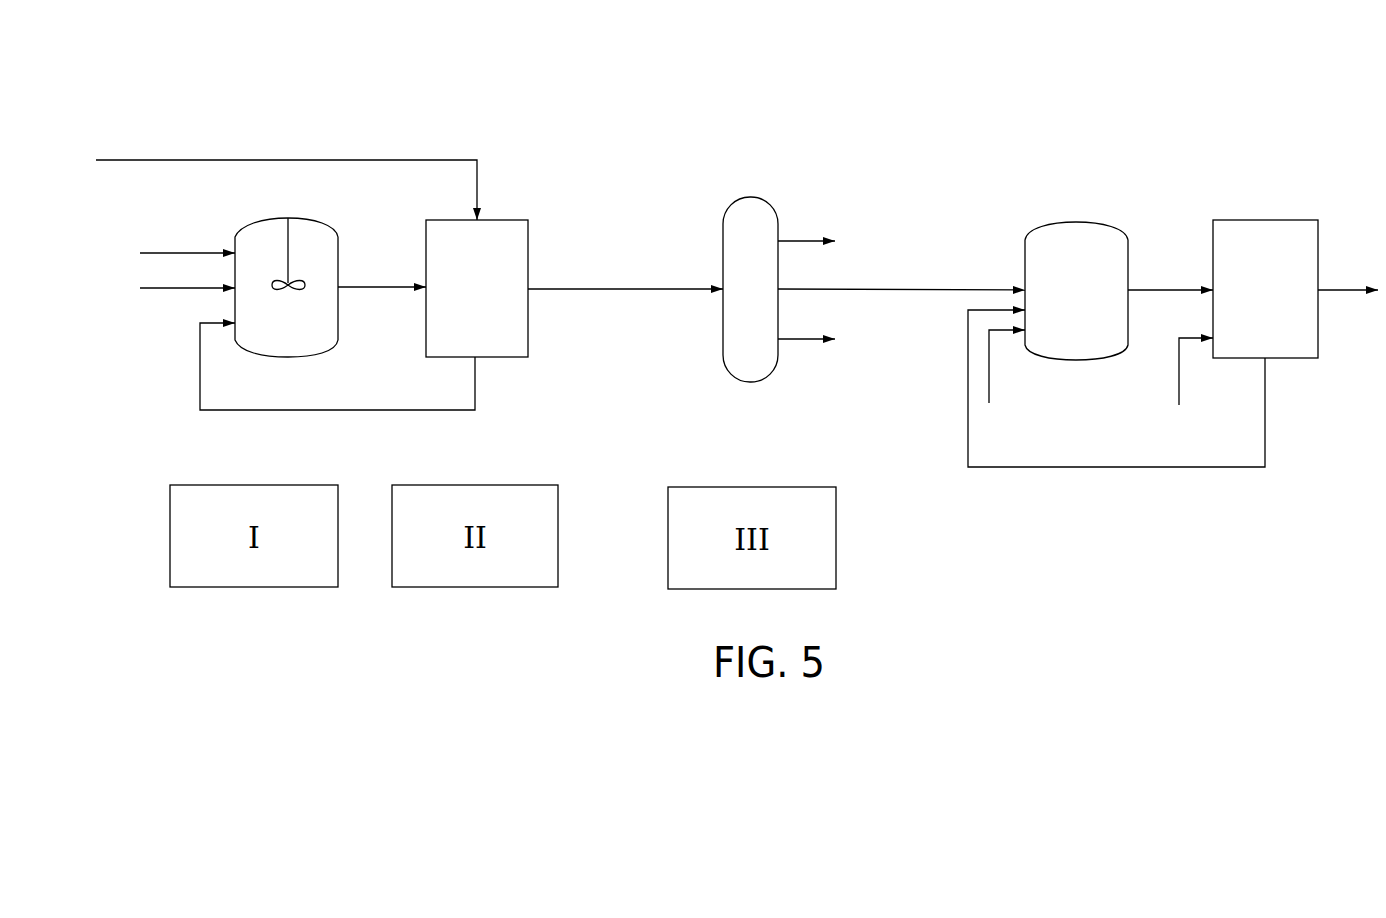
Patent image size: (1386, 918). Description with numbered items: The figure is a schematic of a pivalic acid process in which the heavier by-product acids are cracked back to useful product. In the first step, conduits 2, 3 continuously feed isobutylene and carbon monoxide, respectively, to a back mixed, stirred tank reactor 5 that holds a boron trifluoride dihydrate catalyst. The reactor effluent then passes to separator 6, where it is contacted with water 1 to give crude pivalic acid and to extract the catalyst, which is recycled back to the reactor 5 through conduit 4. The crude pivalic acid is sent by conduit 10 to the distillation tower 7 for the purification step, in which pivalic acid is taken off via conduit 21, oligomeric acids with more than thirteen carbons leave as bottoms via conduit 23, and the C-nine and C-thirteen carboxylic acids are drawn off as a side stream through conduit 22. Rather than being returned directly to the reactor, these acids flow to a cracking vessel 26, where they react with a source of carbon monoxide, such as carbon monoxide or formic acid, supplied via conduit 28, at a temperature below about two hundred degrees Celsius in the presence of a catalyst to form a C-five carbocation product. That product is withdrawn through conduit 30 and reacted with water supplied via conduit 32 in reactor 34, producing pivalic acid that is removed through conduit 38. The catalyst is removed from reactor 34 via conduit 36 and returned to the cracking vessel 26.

The water 1 is at (255, 160).
The conduit 2 is at (160, 253).
The conduit 3 is at (168, 288).
The conduit 4 is at (200, 382).
The stirred tank reactor 5 is at (298, 342).
The separator 6 is at (486, 310).
The distillation tower 7 is at (759, 306).
The conduit 10 is at (600, 289).
The conduit 21 is at (796, 241).
The conduit 22 is at (883, 290).
The conduit 23 is at (793, 339).
The cracking vessel 26 is at (1070, 222).
The conduit 28 is at (989, 394).
The conduit 30 is at (1148, 290).
The conduit 32 is at (1179, 393).
The reactor 34 is at (1258, 220).
The conduit 36 is at (1075, 467).
The conduit 38 is at (1343, 290).